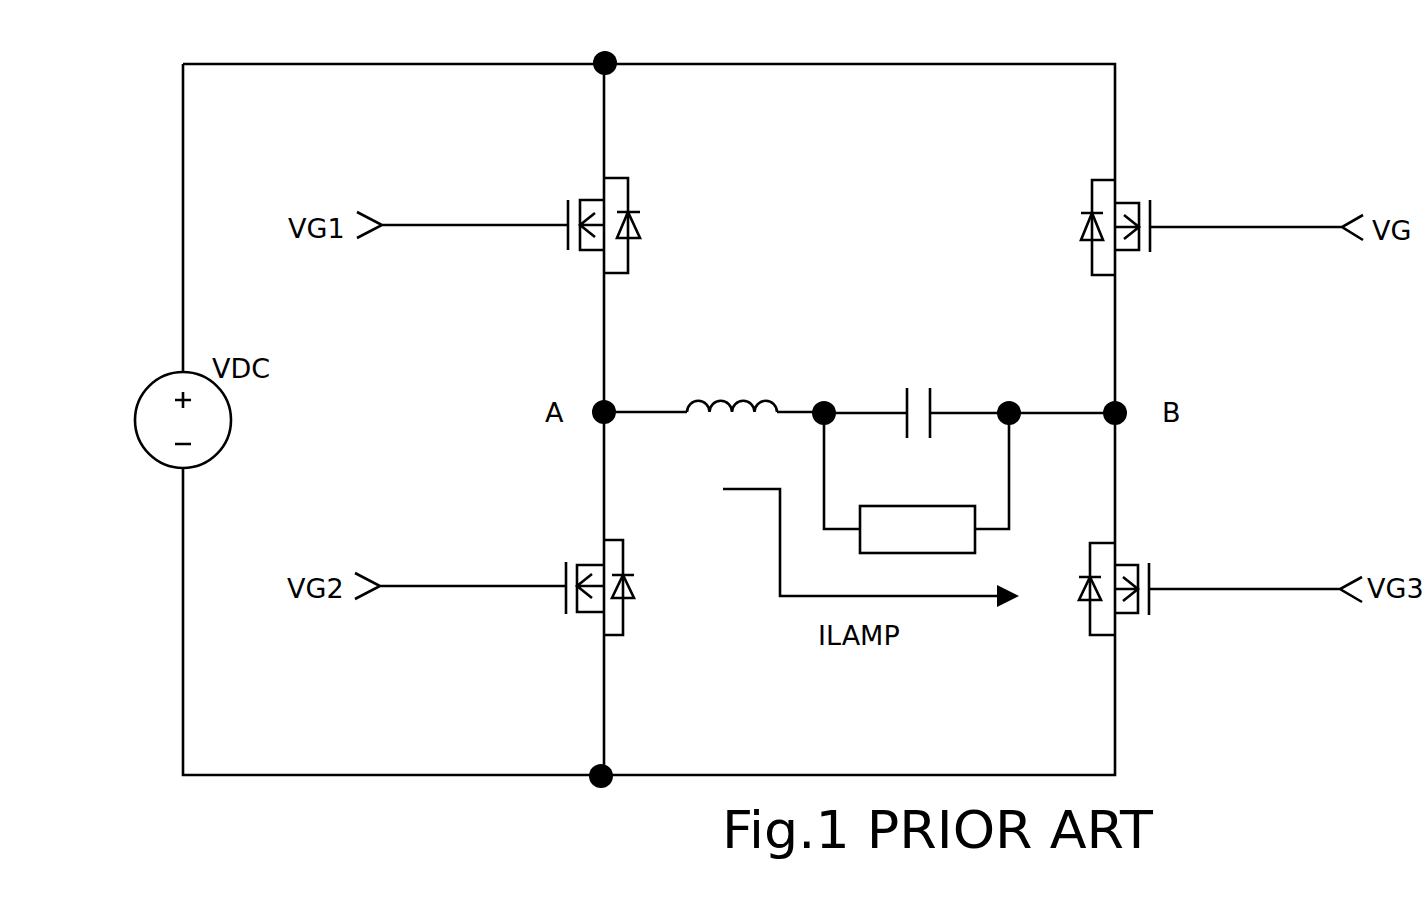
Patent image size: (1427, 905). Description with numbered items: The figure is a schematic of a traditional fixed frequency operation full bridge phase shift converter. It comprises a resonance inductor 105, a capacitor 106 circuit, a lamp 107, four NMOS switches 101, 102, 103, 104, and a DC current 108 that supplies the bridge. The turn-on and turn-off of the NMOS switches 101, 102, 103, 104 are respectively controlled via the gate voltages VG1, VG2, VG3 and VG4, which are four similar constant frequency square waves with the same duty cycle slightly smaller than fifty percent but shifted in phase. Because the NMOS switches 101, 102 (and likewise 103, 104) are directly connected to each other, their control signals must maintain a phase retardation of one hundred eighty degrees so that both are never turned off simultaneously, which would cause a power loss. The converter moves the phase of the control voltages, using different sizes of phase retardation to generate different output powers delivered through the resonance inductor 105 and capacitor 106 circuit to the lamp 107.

The NMOS switch 101 is at (605, 212).
The NMOS switch 102 is at (600, 578).
The NMOS switch 103 is at (1105, 615).
The NMOS switch 104 is at (1120, 215).
The resonance inductor 105 is at (718, 398).
The capacitor circuit 106 is at (913, 387).
The lamp 107 is at (932, 540).
The DC current 108 is at (205, 437).